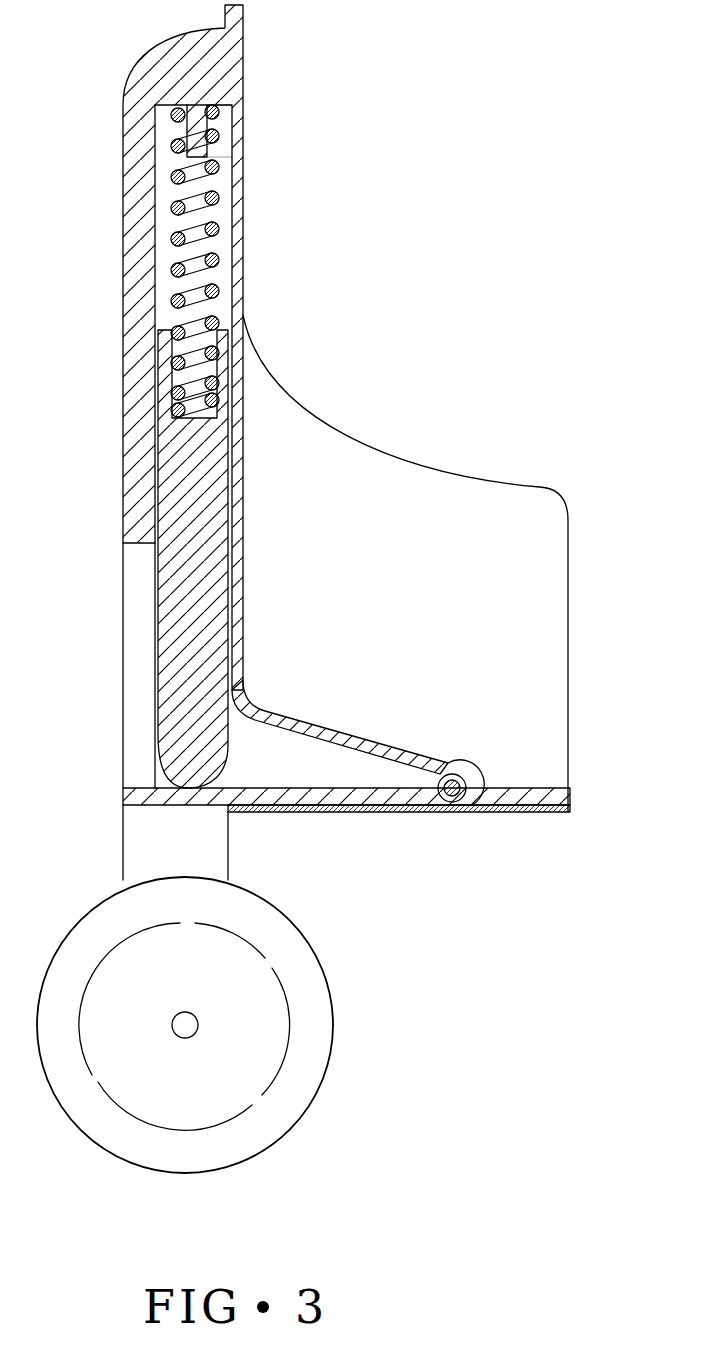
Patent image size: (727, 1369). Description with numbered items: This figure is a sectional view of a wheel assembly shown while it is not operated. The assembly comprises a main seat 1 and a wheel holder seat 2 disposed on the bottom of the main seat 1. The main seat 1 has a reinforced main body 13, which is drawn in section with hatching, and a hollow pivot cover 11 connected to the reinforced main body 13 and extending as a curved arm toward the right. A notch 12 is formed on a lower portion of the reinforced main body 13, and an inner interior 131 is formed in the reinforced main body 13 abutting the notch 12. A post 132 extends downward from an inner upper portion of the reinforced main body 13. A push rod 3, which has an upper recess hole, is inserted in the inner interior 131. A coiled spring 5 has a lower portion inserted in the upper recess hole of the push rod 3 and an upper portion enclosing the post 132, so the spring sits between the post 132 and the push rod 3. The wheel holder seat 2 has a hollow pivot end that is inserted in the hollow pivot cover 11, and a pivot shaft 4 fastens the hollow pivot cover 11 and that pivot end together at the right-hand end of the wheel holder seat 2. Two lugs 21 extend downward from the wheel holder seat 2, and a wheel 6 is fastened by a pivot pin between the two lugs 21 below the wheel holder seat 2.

The main seat 1 is at (556, 522).
The hollow pivot cover 11 is at (460, 764).
The notch 12 is at (133, 623).
The reinforced main body 13 is at (136, 396).
The inner interior 131 is at (223, 157).
The post 132 is at (195, 130).
The wheel holder seat 2 is at (133, 795).
The lugs 21 is at (215, 857).
The push rod 3 is at (165, 550).
The pivot shaft 4 is at (455, 810).
The coiled spring 5 is at (219, 292).
The wheel 6 is at (318, 1051).